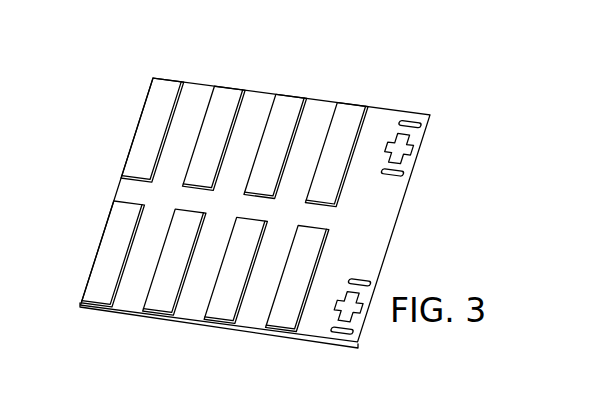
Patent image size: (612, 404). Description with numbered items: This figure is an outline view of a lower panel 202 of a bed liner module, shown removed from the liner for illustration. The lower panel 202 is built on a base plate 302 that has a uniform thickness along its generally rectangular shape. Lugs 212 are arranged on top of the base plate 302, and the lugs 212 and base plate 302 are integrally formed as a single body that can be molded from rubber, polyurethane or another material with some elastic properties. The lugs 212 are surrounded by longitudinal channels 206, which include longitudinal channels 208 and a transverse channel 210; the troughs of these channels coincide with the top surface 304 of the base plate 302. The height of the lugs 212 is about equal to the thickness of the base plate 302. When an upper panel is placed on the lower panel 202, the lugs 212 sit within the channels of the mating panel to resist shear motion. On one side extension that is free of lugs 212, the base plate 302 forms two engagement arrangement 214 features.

The lower panel 202 is at (350, 113).
The longitudinal channels 206 is at (262, 88).
The longitudinal channels 208 is at (127, 303).
The transverse channel 210 is at (340, 219).
The lugs 212 is at (290, 316).
The engagement arrangement 214 is at (437, 150).
The base plate 302 is at (313, 343).
The top surface 304 is at (196, 98).